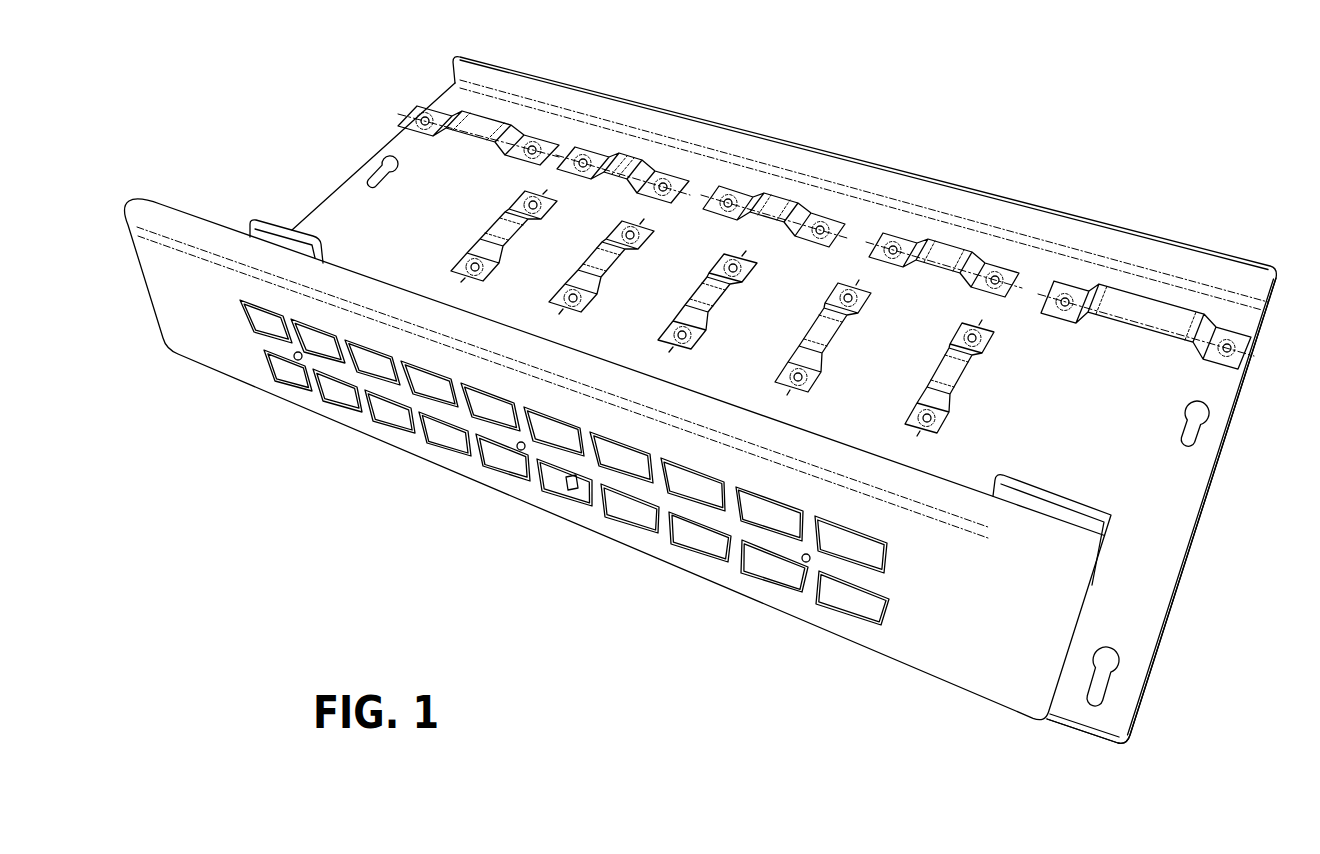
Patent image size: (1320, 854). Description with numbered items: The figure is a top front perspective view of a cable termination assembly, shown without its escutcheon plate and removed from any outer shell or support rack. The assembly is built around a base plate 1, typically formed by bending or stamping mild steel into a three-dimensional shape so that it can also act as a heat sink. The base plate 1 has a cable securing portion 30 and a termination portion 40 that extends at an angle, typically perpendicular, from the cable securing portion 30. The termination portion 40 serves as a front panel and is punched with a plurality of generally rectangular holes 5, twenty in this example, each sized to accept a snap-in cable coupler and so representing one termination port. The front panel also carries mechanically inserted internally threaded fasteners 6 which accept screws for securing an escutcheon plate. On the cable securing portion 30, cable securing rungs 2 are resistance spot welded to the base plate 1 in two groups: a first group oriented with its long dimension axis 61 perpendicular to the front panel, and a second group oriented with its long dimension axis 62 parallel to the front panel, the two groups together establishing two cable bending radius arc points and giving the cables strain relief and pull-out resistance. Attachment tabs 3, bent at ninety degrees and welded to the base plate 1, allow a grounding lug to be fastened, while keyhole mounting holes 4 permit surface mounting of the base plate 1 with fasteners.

The base plate 1 is at (210, 328).
The cable securing rungs 2 is at (1157, 333).
The attachment tabs 3 is at (1065, 495).
The keyhole mounting holes 4 is at (1187, 443).
The holes 5 is at (887, 557).
The internally threaded fasteners 6 is at (808, 563).
The cable securing portion 30 is at (875, 220).
The termination portion 40 is at (957, 663).
The long dimension axis 61 is at (835, 322).
The long dimension axis 62 is at (461, 127).